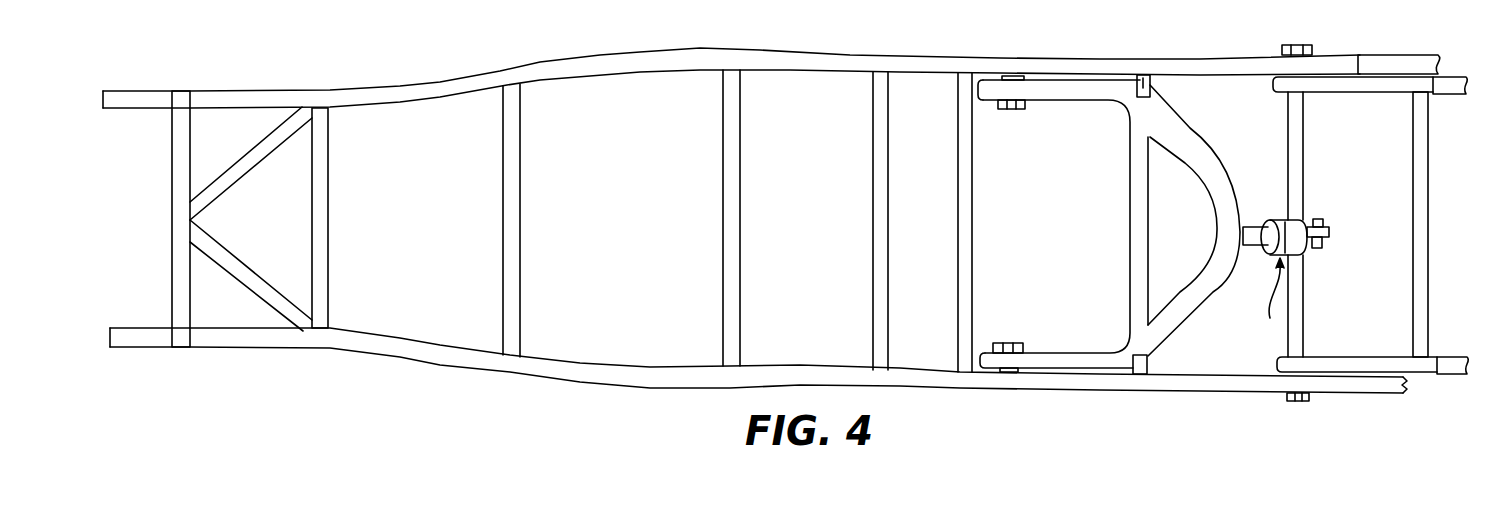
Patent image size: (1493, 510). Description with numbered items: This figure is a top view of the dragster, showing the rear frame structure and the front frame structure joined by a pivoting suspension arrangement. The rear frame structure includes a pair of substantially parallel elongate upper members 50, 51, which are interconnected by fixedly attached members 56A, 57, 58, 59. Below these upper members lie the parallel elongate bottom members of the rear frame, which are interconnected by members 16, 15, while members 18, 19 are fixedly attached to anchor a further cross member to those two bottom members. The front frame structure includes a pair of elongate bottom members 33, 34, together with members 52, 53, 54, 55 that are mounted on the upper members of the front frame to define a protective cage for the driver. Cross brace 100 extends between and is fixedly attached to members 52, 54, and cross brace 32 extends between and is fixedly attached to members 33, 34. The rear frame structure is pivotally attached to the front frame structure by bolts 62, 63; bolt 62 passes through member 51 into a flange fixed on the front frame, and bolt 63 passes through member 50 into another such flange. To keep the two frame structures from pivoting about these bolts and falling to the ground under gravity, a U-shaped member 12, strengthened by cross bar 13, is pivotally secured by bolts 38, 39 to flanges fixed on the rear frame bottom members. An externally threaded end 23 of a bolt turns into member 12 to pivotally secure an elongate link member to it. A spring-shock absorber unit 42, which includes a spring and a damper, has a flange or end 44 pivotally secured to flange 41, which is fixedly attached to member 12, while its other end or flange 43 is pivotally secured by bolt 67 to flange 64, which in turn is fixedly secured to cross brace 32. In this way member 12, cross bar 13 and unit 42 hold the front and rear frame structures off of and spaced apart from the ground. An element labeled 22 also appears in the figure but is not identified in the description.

The elongate upper member 50 is at (422, 80).
The elongate upper member 51 is at (395, 346).
The elongate bottom member 33 is at (1382, 390).
The interconnecting member 56A is at (182, 178).
The interconnecting member 57 is at (326, 162).
The anchoring member 19 is at (252, 163).
The anchoring member 18 is at (246, 270).
The interconnecting member 58 is at (521, 156).
The interconnecting member 16 is at (733, 163).
The interconnecting member 59 is at (880, 156).
The interconnecting member 15 is at (966, 142).
The cross bar 13 is at (1130, 158).
The U-shaped member 12 is at (1213, 248).
The externally threaded end 23 is at (1156, 92).
The lower bracket 22 is at (1150, 370).
The bolt 39 is at (1022, 112).
The bolt 38 is at (1026, 342).
The cross brace 32 is at (1290, 130).
The cross brace 100 is at (1426, 222).
The cage member 52 is at (1385, 95).
The cage member 53 is at (1448, 94).
The elongate bottom member 34 is at (1382, 63).
The bolt 63 is at (1299, 45).
The cage member 54 is at (1378, 360).
The cage member 55 is at (1468, 360).
The bolt 62 is at (1290, 400).
The flange 41 is at (1247, 228).
The flange or end 44 is at (1252, 252).
The flange or end 43 is at (1326, 247).
The bolt 67 is at (1333, 205).
The flange 64 is at (1333, 233).
The spring-shock absorber unit 42 is at (1263, 295).